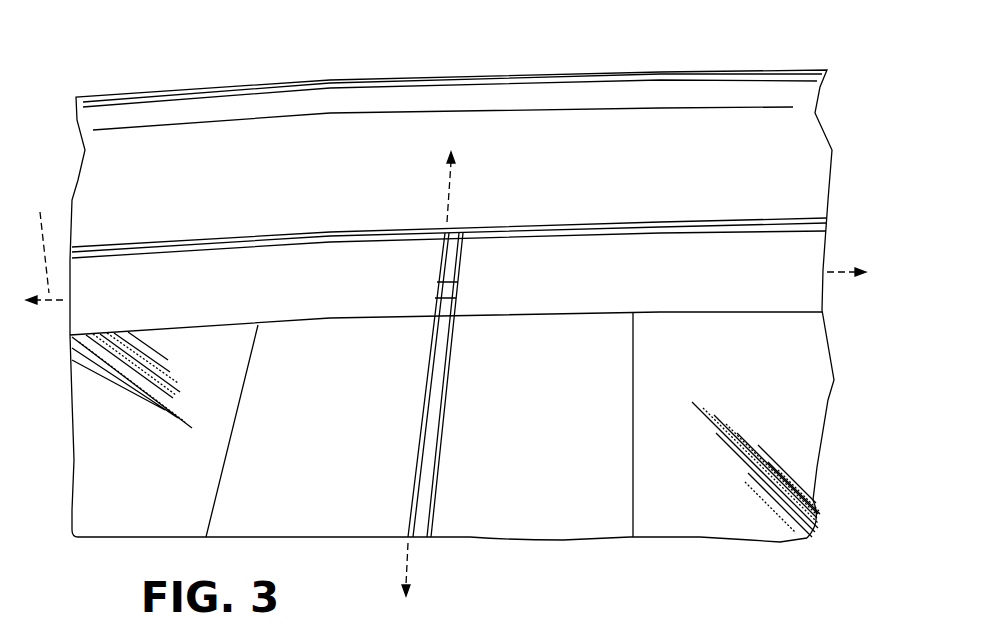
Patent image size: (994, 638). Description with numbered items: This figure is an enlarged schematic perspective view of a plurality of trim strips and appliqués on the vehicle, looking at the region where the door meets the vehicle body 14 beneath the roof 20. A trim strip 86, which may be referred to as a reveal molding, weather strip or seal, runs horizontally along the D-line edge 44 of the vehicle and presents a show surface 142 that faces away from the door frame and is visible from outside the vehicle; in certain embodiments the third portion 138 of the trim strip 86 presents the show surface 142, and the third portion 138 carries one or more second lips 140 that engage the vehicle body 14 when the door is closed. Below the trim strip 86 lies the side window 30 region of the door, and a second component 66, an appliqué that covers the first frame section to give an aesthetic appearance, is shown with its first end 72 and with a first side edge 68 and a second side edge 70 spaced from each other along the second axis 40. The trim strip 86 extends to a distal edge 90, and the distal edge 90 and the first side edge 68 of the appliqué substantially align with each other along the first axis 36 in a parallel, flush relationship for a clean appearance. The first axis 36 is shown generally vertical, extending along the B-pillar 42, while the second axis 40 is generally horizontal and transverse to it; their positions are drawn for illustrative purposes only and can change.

The vehicle body 14 is at (248, 107).
The roof 20 is at (517, 97).
The side window 30 is at (142, 460).
The first axis 36 is at (457, 187).
The second axis 40 is at (44, 246).
The B-pillar 42 is at (384, 548).
The D-line edge 44 is at (795, 232).
The second component 66 is at (317, 493).
The first side edge 68 is at (447, 371).
The second side edge 70 is at (230, 432).
The first end 72 is at (330, 320).
The trim strip 86 is at (173, 273).
The distal edge 90 is at (437, 298).
The third portion 138 is at (449, 218).
The show surface 142 is at (262, 278).
The second lip 140 is at (567, 635).